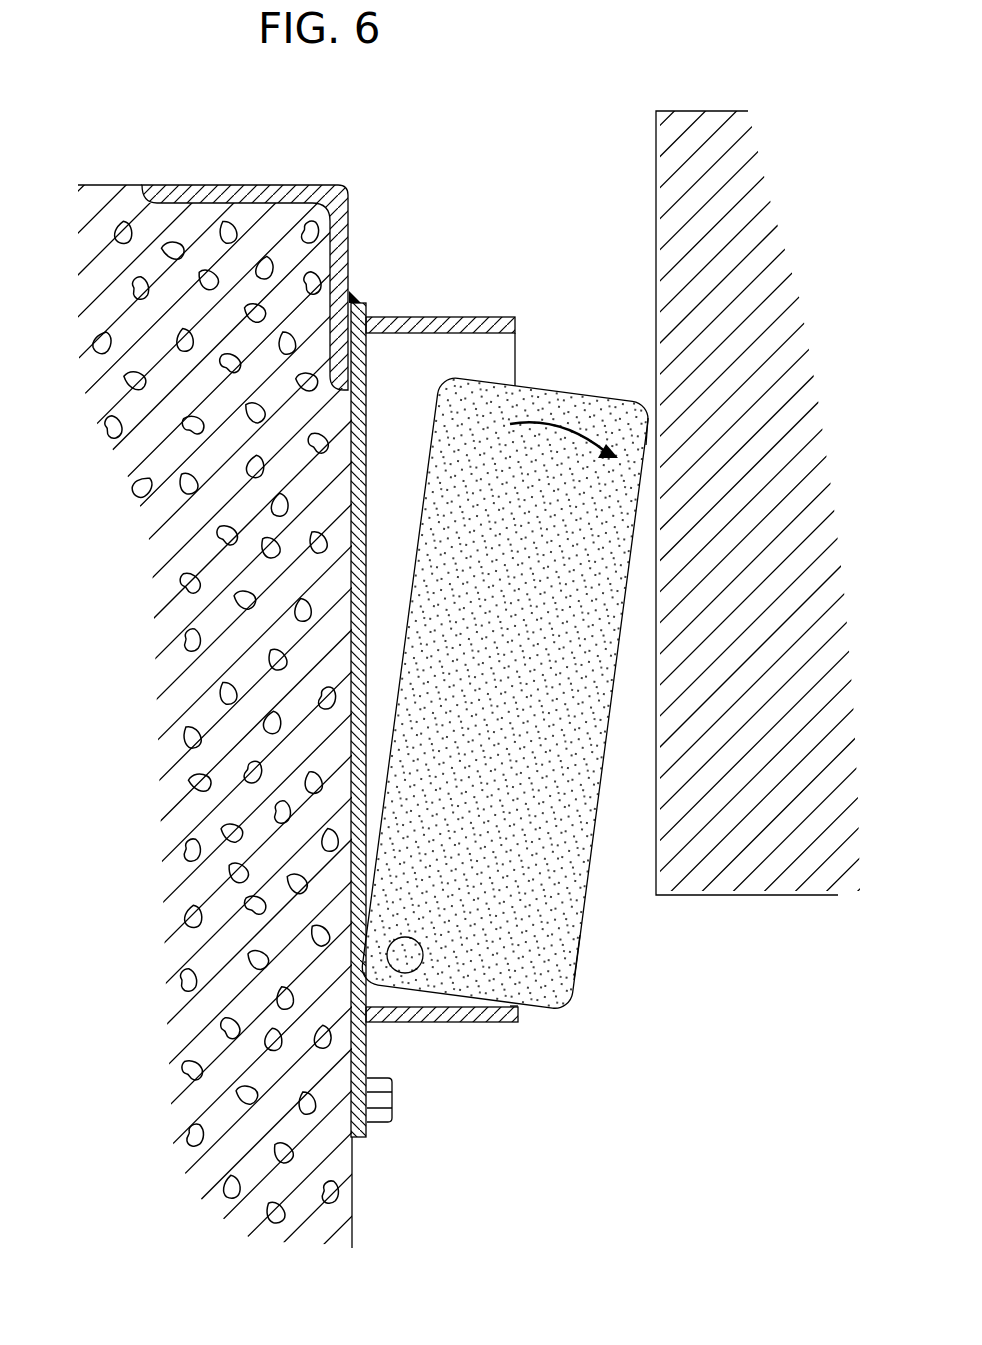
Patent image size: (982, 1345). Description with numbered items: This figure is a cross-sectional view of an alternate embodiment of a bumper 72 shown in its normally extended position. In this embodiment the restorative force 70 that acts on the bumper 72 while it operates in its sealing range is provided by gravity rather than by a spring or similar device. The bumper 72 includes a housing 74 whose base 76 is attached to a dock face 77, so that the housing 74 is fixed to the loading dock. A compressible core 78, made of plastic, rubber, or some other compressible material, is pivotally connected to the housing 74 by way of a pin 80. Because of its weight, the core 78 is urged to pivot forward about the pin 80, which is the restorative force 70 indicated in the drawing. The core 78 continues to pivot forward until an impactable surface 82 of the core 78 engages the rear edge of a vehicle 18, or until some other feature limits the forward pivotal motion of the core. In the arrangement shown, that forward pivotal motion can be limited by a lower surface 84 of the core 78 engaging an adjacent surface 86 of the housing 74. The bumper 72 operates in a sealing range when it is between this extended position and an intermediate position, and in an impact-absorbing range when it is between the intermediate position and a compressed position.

The vehicle 18 is at (655, 204).
The restorative force 70 is at (568, 432).
The bumper 72 is at (515, 165).
The housing 74 is at (479, 316).
The base 76 is at (360, 296).
The dock face 77 is at (352, 205).
The compressible core 78 is at (575, 980).
The pin 80 is at (405, 936).
The impactable surface 82 is at (648, 430).
The lower surface 84 is at (505, 1005).
The adjacent surface 86 is at (512, 1005).